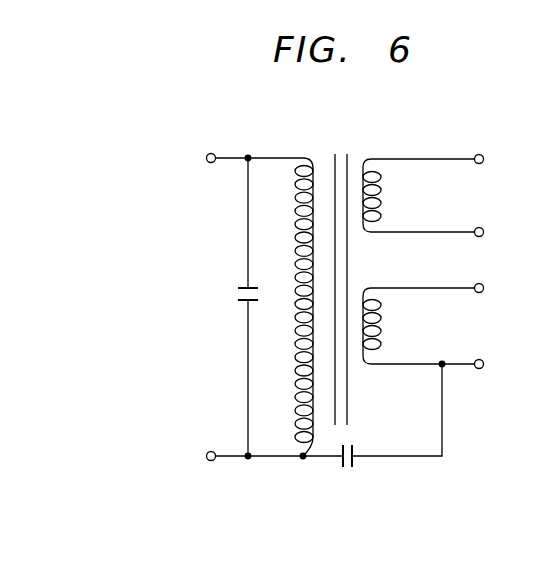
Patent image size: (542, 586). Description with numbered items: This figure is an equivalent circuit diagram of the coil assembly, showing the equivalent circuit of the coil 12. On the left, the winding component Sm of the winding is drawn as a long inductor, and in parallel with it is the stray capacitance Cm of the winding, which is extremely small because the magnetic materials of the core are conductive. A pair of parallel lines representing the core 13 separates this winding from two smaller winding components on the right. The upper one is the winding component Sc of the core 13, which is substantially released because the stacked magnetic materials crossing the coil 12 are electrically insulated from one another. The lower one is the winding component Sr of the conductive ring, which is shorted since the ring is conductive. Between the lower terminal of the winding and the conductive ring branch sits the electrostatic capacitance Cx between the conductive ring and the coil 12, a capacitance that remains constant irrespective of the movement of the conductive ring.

The coil 12 is at (346, 149).
The core 13 is at (348, 263).
The winding component of the winding Sm is at (297, 198).
The winding component of the core Sc is at (382, 201).
The winding component of the conductive ring Sr is at (382, 330).
The stray capacitance of the winding Cm is at (239, 288).
The electrostatic capacitance between the conductive ring and the coil Cx is at (354, 462).